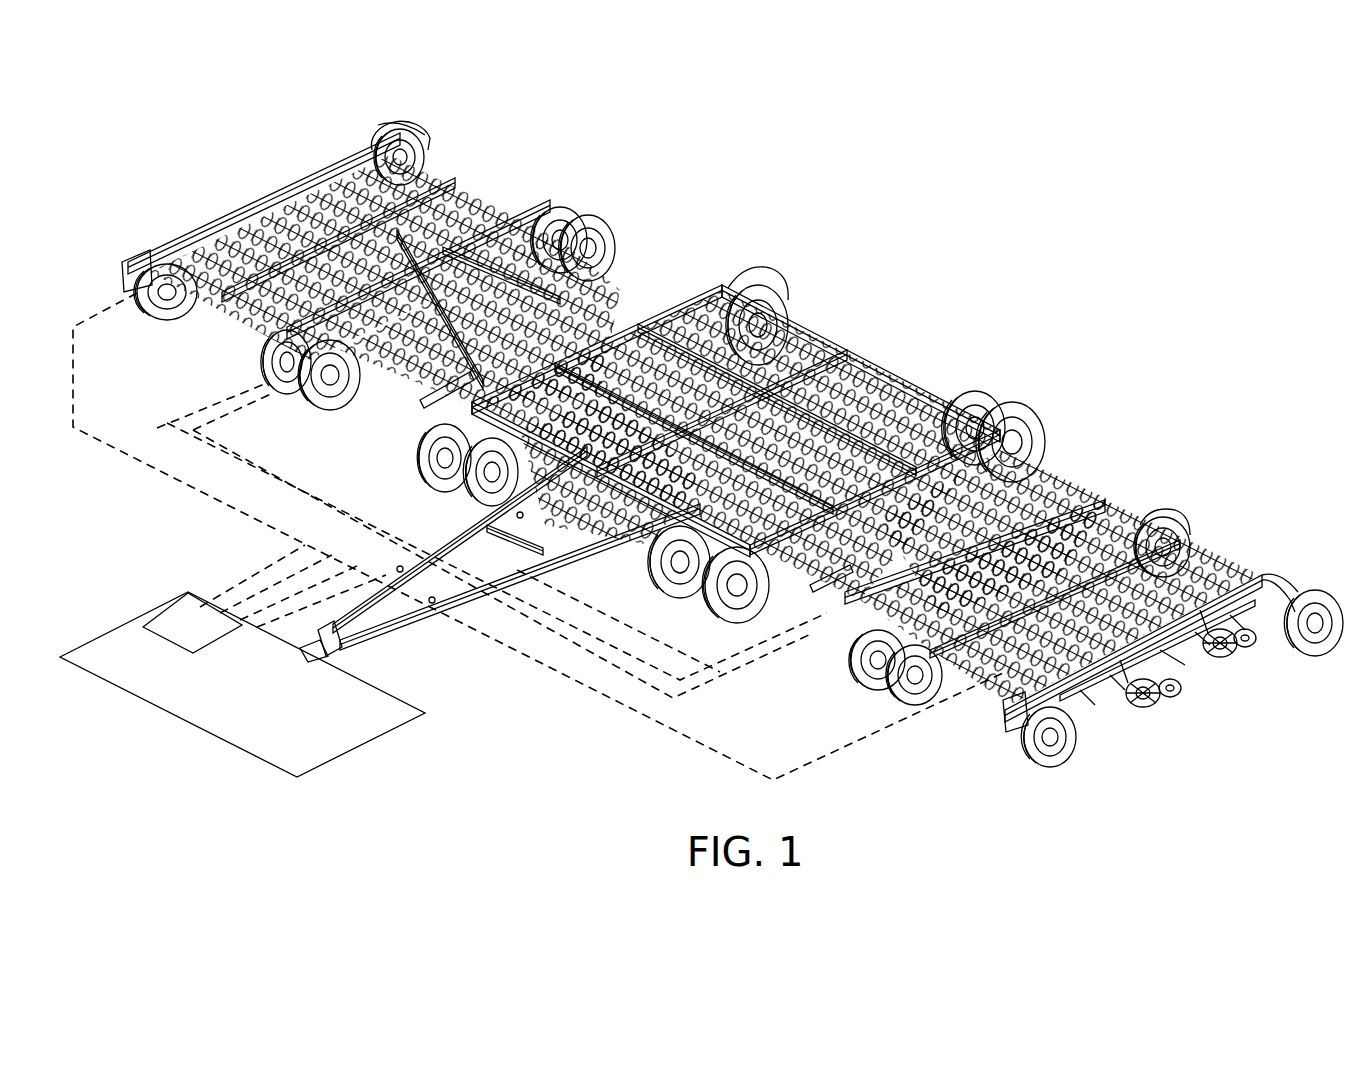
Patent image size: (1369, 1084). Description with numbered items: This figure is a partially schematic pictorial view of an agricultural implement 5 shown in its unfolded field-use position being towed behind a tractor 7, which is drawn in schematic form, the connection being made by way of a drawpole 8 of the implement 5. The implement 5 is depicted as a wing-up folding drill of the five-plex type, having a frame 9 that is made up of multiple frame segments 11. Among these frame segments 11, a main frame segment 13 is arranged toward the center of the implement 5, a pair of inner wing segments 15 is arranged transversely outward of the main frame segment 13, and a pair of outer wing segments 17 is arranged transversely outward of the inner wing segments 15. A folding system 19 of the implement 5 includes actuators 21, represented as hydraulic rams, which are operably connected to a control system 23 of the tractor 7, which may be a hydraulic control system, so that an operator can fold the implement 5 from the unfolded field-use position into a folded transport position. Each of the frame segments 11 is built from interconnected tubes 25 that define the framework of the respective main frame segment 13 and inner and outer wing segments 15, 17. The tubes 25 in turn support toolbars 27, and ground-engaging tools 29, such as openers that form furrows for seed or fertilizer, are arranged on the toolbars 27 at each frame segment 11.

The agricultural implement 5 is at (905, 185).
The tractor 7 is at (245, 705).
The drawpole 8 is at (580, 547).
The frame 9 is at (942, 368).
The frame segments 11 is at (507, 152).
The main frame segment 13 is at (838, 413).
The inner wing segments 15 is at (637, 303).
The outer wing segments 17 is at (455, 213).
The folding system 19 is at (130, 455).
The actuators 21 is at (326, 168).
The control system 23 is at (203, 641).
The tubes 25 is at (260, 293).
The toolbars 27 is at (1117, 707).
The ground-engaging tools 29 is at (1177, 703).